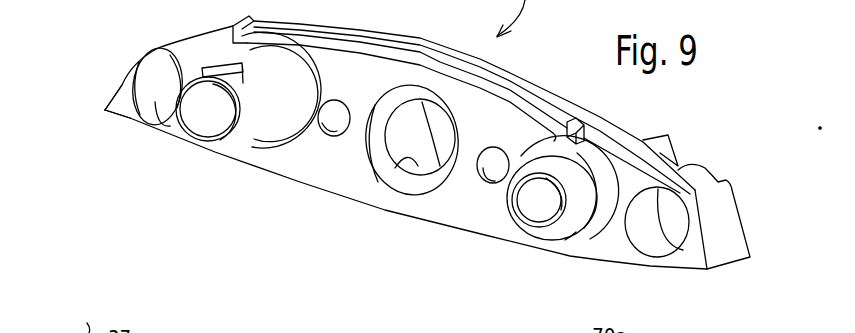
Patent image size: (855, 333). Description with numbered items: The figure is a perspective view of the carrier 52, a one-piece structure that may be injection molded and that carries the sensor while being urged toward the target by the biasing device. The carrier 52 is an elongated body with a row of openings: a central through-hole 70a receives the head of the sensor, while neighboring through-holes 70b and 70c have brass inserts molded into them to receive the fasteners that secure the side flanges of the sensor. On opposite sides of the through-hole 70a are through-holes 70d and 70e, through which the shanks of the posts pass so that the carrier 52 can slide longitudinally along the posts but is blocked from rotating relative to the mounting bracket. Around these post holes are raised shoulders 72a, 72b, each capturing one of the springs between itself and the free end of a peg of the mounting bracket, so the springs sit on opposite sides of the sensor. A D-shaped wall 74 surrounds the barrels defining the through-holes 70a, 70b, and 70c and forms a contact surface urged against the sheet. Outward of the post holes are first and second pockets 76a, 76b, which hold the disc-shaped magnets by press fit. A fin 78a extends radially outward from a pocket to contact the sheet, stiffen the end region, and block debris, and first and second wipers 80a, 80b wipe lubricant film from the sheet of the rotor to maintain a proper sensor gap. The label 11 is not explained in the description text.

The first wiper 80a is at (718, 250).
The second wiper 80b is at (117, 86).
The first pocket 76a is at (640, 238).
The second pocket 76b is at (152, 114).
The shoulder 72a is at (572, 240).
The shoulder 72b is at (262, 146).
The through-hole 70a is at (400, 162).
The through-hole 70b is at (490, 182).
The through-hole 70c is at (333, 138).
The through-hole 70d is at (535, 212).
The through-hole 70e is at (190, 125).
The fin 78a is at (673, 150).
The carrier 52 is at (258, 332).
The D-shaped wall 74 is at (407, 332).
The vehicle 11 is at (75, 322).